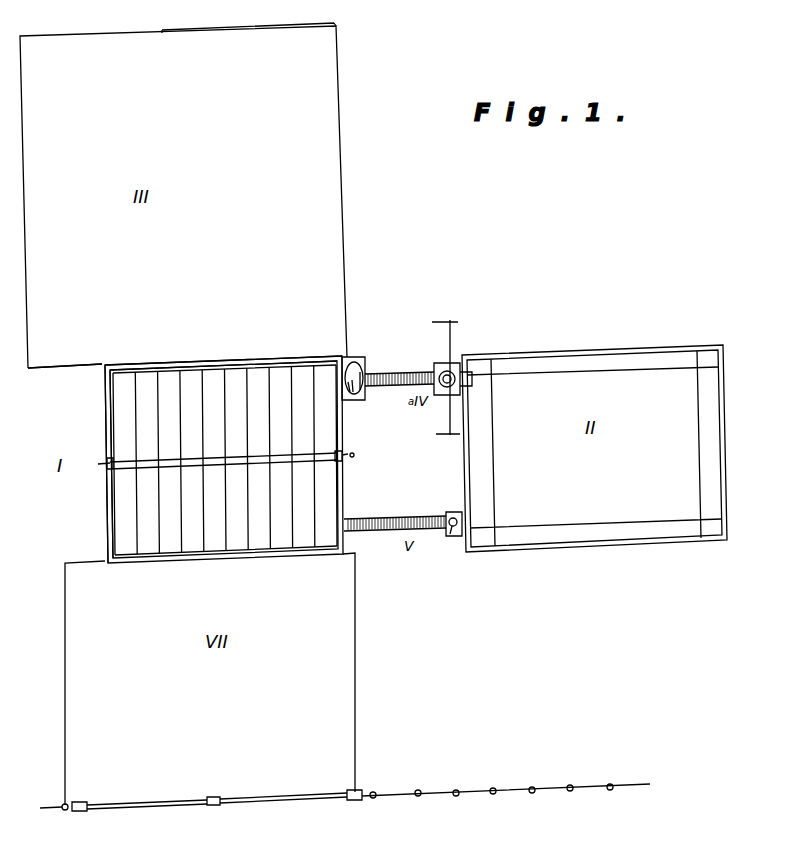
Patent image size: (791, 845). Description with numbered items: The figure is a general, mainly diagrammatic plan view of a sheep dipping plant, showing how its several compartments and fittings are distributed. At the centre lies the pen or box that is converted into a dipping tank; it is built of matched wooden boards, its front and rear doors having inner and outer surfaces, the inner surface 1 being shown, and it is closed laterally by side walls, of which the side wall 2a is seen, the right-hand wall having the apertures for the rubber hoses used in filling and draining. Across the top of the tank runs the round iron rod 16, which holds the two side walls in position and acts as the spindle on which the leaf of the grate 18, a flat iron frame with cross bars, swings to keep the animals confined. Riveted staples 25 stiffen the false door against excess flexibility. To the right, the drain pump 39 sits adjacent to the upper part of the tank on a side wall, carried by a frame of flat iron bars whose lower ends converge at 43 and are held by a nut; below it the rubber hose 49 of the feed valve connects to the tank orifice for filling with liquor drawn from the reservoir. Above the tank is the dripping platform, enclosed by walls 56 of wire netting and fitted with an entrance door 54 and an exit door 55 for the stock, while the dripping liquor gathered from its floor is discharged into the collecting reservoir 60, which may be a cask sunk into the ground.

The inner surface of front and rear doors 1 is at (222, 558).
The side wall of the pen 2a is at (106, 498).
The round iron rod 16 is at (354, 454).
The leaf of the grate 18 is at (265, 420).
The riveted staples 25 is at (166, 362).
The pump 39 is at (436, 366).
The converging lower ends of the bracket bars 43 is at (378, 390).
The rubber hose 49 is at (442, 532).
The entrance door of the dripping pen 54 is at (46, 370).
The exit door of the dripping pen 55 is at (205, 32).
The walls of the dripping platform 56 is at (96, 38).
The collecting reservoir 60 is at (359, 362).